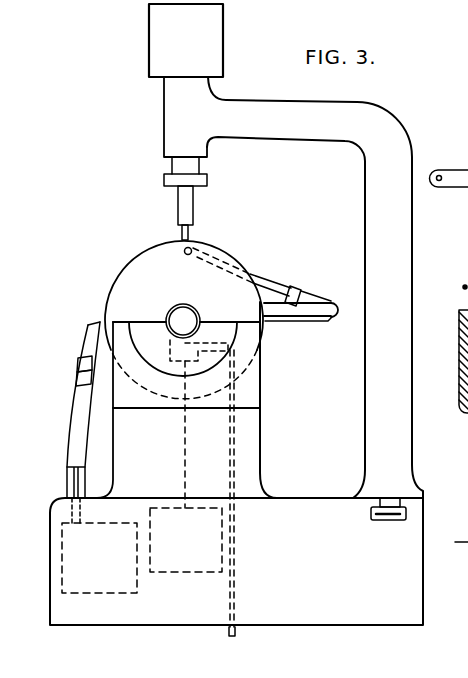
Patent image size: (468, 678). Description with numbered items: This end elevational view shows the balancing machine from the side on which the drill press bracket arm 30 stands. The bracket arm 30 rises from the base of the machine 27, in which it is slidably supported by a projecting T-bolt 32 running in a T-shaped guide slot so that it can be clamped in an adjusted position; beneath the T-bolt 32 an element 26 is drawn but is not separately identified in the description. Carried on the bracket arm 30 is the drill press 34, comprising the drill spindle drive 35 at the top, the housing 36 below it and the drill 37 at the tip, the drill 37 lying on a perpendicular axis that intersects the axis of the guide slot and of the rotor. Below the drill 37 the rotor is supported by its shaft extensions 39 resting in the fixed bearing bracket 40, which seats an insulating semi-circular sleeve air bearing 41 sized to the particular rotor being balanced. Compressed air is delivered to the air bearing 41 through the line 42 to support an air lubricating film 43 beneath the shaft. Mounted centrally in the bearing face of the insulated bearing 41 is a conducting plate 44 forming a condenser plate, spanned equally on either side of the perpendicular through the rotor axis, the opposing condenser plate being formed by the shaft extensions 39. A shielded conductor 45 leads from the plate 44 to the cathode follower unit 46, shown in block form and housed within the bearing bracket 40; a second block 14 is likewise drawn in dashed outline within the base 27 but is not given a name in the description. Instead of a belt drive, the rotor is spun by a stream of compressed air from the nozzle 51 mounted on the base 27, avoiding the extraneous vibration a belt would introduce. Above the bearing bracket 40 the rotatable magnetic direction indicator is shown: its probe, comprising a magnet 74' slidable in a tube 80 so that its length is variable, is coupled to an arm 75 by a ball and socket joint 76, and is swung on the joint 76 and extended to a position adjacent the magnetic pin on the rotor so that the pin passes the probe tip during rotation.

The control unit 14 is at (84, 593).
The mounting plate 26 is at (407, 519).
The base of the machine 27 is at (418, 603).
The drill press bracket arm 30 is at (366, 379).
The T-bolt 32 is at (398, 512).
The drill press 34 is at (176, 129).
The drill spindle drive 35 is at (162, 64).
The housing 36 is at (180, 205).
The drill 37 is at (183, 232).
The shaft extensions 39 is at (182, 306).
The fixed bearing bracket 40 is at (262, 394).
The air bearing 41 is at (226, 328).
The line 42 is at (238, 463).
The air lubricating film 43 is at (171, 318).
The conducting plate 44 is at (172, 340).
The shielded conductor 45 is at (183, 460).
The cathode follower unit 46 is at (188, 573).
The nozzle 51 is at (75, 395).
The magnet 74' is at (258, 273).
The arm 75 is at (295, 318).
The ball and socket joint 76 is at (334, 322).
The tube 80 is at (306, 291).